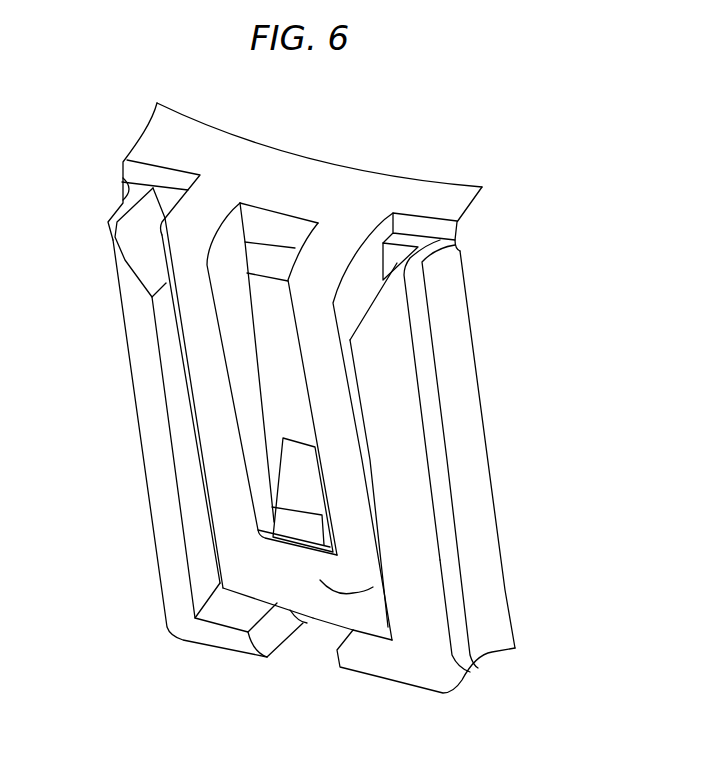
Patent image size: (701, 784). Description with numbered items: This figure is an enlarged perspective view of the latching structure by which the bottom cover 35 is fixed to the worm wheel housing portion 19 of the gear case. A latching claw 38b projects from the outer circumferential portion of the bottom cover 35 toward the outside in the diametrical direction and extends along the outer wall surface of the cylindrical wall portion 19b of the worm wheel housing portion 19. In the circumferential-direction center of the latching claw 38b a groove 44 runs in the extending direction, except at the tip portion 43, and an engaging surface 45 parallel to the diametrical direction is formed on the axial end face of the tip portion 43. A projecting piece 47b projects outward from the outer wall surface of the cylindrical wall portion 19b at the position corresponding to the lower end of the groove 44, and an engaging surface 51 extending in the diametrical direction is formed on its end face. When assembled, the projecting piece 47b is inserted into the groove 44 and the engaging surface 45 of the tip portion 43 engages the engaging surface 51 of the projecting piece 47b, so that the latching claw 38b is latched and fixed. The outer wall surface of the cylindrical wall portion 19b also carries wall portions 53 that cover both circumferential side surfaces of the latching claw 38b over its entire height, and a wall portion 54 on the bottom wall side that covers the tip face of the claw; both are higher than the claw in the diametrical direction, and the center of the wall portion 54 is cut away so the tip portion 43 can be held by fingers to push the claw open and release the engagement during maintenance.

The bottom cover 35 is at (320, 155).
The groove 44 is at (272, 376).
The wall portion 53 is at (150, 437).
The engaging surface 45 is at (263, 519).
The tip portion 43 is at (263, 565).
The latching claw 38b is at (334, 395).
The worm wheel housing portion 19 is at (475, 475).
The cylindrical wall portion 19b is at (480, 507).
The engaging surface 51 is at (308, 555).
The projecting piece 47b is at (297, 527).
The wall portion 54 is at (217, 637).